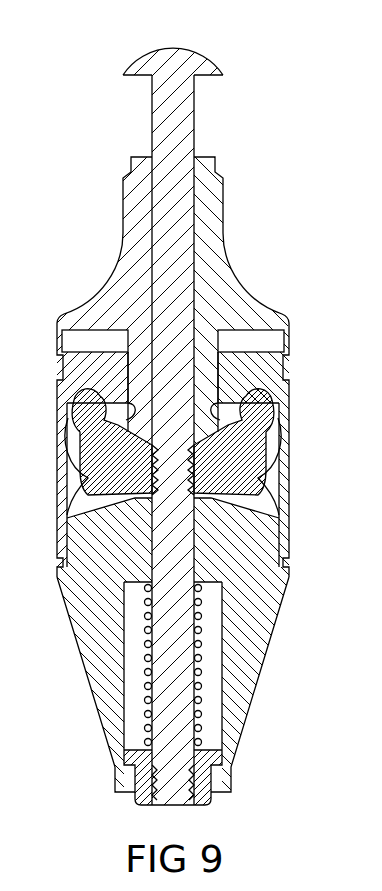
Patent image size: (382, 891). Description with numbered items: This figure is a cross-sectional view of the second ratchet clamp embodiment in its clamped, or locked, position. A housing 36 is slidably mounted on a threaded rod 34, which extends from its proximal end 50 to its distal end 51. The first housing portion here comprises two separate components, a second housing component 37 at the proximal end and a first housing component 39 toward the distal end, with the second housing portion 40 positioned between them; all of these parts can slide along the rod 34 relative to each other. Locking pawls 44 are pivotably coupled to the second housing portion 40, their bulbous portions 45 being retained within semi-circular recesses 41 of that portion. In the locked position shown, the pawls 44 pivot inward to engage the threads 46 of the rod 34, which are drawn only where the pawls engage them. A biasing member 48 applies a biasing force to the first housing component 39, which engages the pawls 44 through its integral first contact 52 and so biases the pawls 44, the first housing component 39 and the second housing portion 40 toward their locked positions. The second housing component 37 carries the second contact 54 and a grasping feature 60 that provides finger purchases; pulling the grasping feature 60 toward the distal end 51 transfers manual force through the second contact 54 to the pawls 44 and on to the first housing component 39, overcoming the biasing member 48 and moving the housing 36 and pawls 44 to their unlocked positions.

The threaded rod 34 is at (162, 117).
The housing 36 is at (88, 731).
The second housing component 37 is at (205, 165).
The first housing component 39 is at (258, 633).
The second housing portion 40 is at (278, 425).
The semi-circular recesses 41 is at (65, 422).
The locking pawls 44 is at (72, 508).
The bulbous portions 45 is at (87, 407).
The threads 46 is at (165, 462).
The biasing member 48 is at (147, 668).
The proximal end 50 is at (172, 62).
The distal end 51 is at (176, 802).
The first contact 52 is at (135, 505).
The second contact 54 is at (93, 472).
The grasping feature 60 is at (100, 290).